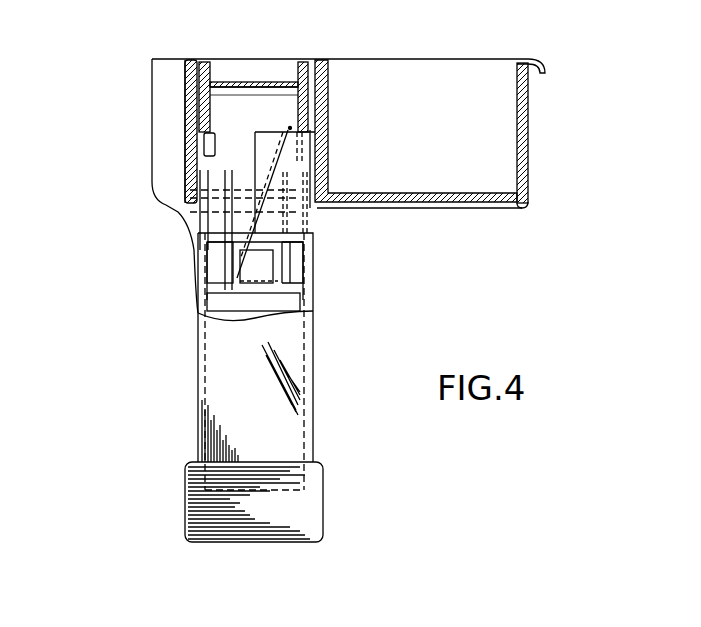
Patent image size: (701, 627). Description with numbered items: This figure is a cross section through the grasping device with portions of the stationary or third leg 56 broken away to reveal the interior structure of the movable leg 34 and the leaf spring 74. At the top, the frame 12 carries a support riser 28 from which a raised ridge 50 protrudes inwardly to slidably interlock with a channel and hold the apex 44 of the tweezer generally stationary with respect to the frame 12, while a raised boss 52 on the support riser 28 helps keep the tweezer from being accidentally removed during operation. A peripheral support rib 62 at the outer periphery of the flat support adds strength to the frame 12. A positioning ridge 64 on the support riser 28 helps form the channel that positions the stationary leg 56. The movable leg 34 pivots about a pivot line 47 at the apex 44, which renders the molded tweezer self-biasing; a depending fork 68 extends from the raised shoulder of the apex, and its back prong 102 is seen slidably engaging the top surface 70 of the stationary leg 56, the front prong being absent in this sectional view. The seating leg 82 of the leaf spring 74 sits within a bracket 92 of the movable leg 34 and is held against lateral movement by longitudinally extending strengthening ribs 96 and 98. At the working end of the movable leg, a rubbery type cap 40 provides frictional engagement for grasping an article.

The frame 12 is at (450, 59).
The support riser 28 is at (185, 70).
The movable leg 34 is at (213, 214).
The rubbery type cap 40 is at (323, 487).
The apex 44 is at (238, 84).
The pivot line 47 is at (218, 78).
The raised ridge 50 is at (190, 112).
The raised boss 52 is at (203, 62).
The stationary leg 56 is at (313, 330).
The peripheral support rib 62 is at (525, 210).
The positioning ridge 64 is at (320, 167).
The depending fork 68 is at (272, 98).
The top surface 70 is at (274, 130).
The leaf spring 74 is at (255, 230).
The seating leg 82 is at (280, 280).
The bracket 92 is at (237, 278).
The strengthening rib 96 is at (250, 266).
The strengthening rib 98 is at (293, 272).
The back prong 102 is at (214, 152).